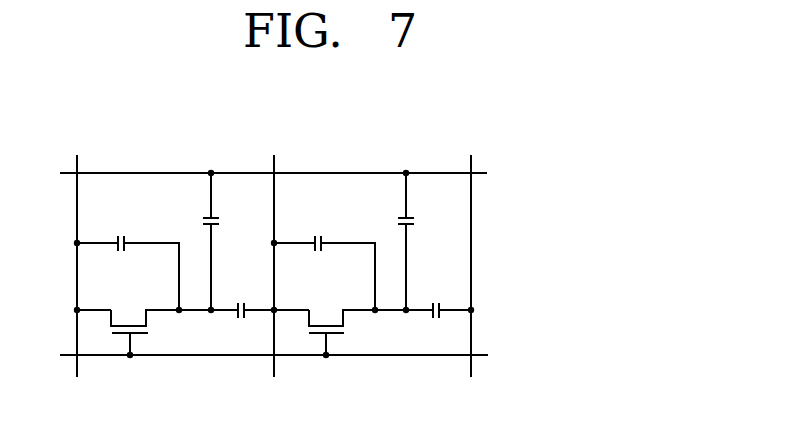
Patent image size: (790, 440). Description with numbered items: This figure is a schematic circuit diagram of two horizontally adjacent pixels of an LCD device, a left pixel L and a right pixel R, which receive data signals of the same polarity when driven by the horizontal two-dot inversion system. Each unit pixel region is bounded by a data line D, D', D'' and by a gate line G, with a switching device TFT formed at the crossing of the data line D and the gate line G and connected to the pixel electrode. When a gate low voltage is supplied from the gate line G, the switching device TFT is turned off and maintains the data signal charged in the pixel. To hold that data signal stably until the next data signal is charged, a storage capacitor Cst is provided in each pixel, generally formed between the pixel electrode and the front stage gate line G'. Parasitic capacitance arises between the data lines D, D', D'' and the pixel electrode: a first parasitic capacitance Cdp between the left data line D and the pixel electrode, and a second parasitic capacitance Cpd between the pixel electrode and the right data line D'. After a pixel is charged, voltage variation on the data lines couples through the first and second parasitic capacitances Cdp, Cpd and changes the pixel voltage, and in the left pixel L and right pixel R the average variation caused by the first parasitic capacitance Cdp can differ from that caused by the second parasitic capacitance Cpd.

The front stage gate line G' is at (259, 174).
The gate line G is at (261, 356).
The data line D is at (77, 254).
The data line D' is at (276, 254).
The data line D'' is at (474, 254).
The left pixel L is at (127, 220).
The right pixel R is at (329, 220).
The switching device TFT is at (242, 320).
The first parasitic capacitance Cdp is at (226, 260).
The storage capacitor Cst is at (316, 241).
The second parasitic capacitance Cpd is at (342, 296).